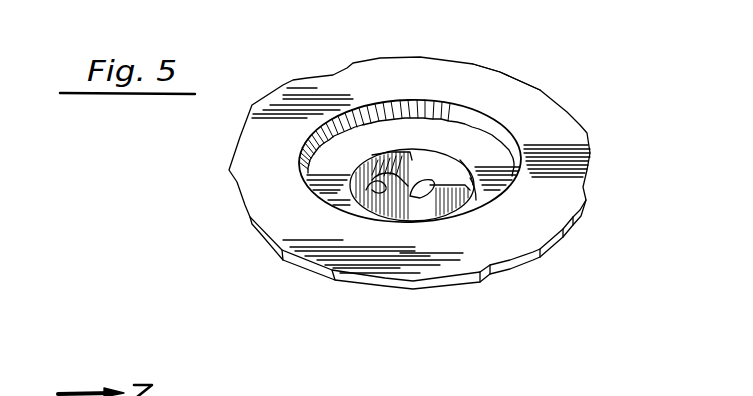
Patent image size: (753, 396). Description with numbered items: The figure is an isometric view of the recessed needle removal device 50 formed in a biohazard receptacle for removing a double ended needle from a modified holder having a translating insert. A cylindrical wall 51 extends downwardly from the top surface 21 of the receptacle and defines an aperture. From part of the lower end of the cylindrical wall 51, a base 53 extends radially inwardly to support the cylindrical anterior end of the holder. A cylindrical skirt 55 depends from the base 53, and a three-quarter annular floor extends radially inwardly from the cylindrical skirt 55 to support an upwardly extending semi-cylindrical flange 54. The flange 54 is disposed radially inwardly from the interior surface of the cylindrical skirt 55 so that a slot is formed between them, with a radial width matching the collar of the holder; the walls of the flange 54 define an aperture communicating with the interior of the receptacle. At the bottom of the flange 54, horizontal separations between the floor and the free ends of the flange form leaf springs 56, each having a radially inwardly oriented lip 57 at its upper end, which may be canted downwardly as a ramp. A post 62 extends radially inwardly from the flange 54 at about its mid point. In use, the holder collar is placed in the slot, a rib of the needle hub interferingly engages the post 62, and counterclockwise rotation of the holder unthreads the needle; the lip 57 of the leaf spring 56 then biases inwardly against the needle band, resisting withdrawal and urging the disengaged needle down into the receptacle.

The needle removal device 50 is at (532, 92).
The base 53 is at (490, 153).
The cylindrical wall 51 is at (388, 113).
The semi-cylindrical flange 54 is at (437, 150).
The post 62 is at (462, 125).
The leaf spring 56 is at (397, 165).
The lip 57 is at (368, 182).
The cylindrical skirt 55 is at (476, 188).
The top surface 21 is at (487, 93).